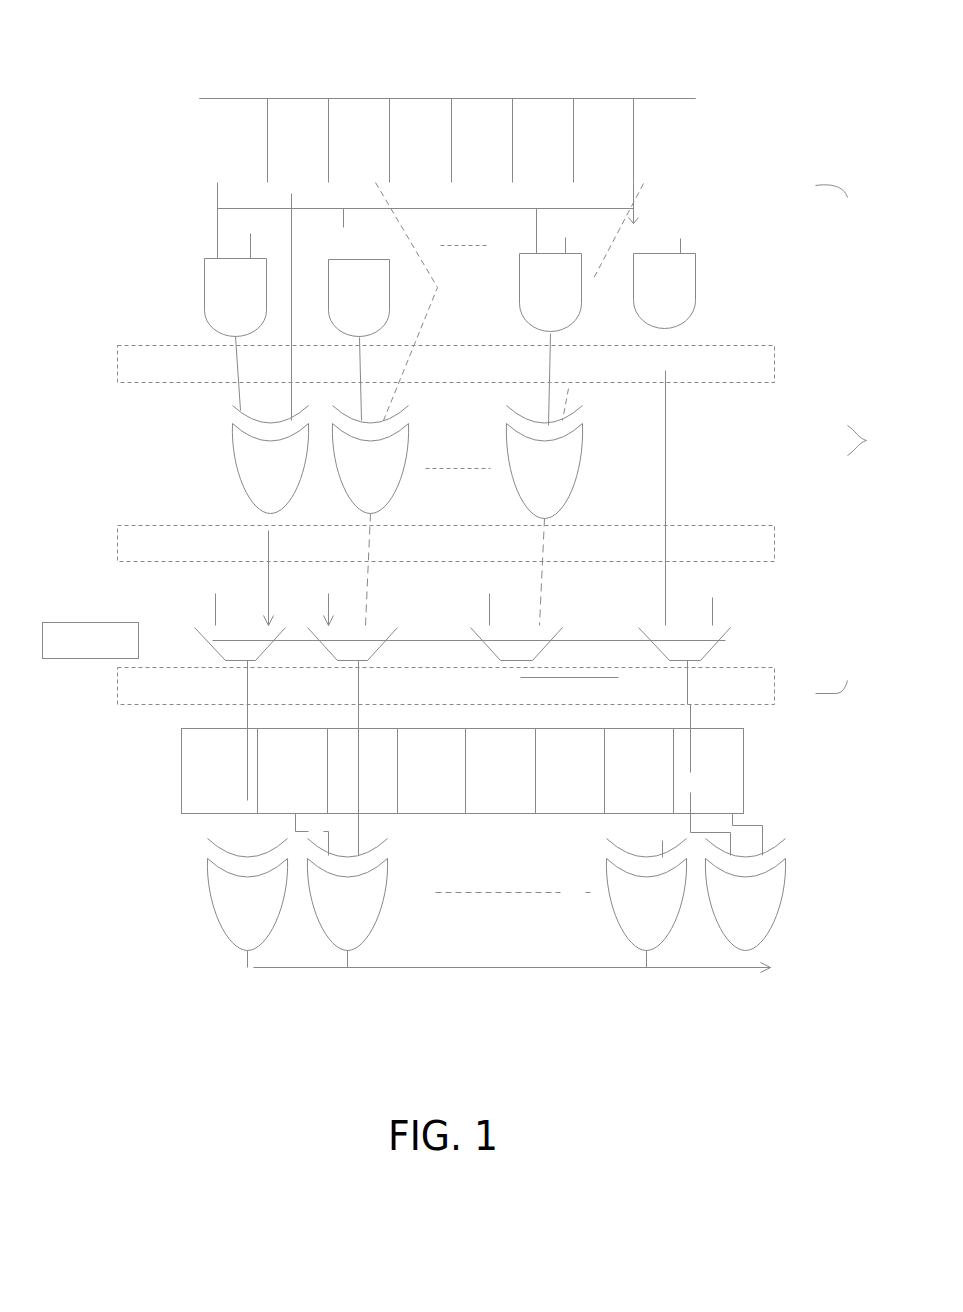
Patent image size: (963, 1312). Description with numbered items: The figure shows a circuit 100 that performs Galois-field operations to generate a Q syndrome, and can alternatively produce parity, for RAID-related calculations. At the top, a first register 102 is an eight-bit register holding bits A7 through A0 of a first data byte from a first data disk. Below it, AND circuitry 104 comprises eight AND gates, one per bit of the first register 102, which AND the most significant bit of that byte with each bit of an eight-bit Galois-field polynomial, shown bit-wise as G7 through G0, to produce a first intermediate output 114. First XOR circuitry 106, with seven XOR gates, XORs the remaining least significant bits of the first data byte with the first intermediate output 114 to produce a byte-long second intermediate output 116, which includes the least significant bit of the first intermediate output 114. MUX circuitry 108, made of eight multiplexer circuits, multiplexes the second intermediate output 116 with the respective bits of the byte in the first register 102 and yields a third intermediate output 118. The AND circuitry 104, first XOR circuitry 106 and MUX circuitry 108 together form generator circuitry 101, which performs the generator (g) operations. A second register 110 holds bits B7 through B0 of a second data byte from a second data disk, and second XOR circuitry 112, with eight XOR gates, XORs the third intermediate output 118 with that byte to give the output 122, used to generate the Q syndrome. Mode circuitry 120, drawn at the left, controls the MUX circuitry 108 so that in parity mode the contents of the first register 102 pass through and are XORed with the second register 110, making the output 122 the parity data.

The circuit 100 is at (144, 78).
The generator circuitry 101 is at (898, 459).
The first register 102 is at (199, 140).
The AND circuitry 104 is at (204, 298).
The first XOR circuitry 106 is at (181, 460).
The MUX circuitry 108 is at (737, 638).
The second register 110 is at (181, 770).
The second XOR circuitry 112 is at (179, 890).
The first intermediate output 114 is at (710, 345).
The second intermediate output 116 is at (673, 525).
The third intermediate output 118 is at (775, 677).
The mode circuitry 120 is at (96, 620).
The output 122 is at (493, 967).